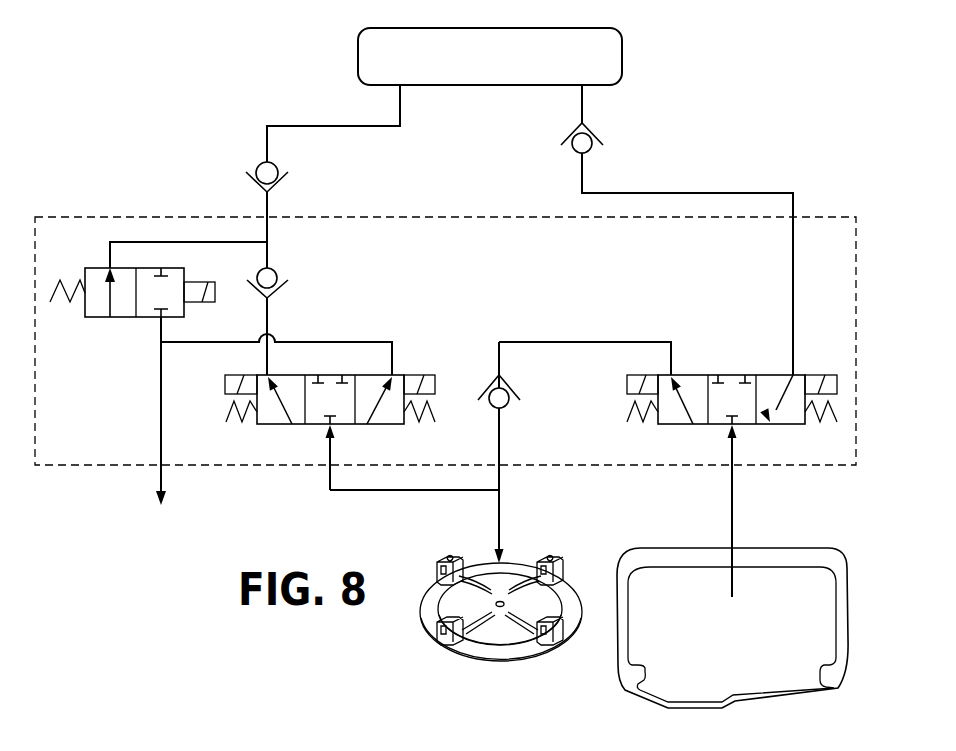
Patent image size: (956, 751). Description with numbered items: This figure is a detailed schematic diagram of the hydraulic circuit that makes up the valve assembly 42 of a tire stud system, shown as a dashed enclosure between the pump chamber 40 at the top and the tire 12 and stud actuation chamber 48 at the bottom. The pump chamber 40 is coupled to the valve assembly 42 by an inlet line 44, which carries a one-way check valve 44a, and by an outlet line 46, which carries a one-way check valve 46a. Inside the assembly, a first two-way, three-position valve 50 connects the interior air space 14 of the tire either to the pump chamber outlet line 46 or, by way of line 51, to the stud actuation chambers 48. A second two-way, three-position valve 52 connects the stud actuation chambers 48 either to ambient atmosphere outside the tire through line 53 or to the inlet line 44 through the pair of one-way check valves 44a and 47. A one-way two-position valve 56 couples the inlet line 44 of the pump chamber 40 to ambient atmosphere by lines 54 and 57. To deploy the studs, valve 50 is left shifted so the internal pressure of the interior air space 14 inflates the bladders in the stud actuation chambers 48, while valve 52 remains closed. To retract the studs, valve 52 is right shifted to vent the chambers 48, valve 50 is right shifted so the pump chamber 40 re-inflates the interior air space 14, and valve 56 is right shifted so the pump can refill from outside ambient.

The tire 12 is at (791, 548).
The interior air space 14 is at (718, 646).
The pump chamber 40 is at (623, 57).
The valve assembly 42 is at (73, 213).
The inlet line 44 is at (307, 126).
The one-way check valve 44a is at (282, 179).
The outlet line 46 is at (755, 193).
The one-way check valve 46a is at (597, 138).
The one-way check valve 47 is at (282, 288).
The stud actuation chamber 48 is at (500, 662).
The first two-way, three-position valve 50 is at (678, 425).
The line 51 is at (586, 342).
The second two-way, three-position valve 52 is at (270, 424).
The line 53 is at (376, 342).
The line 54 is at (159, 412).
The one-way 2-position valve 56 is at (122, 317).
The line 57 is at (190, 241).